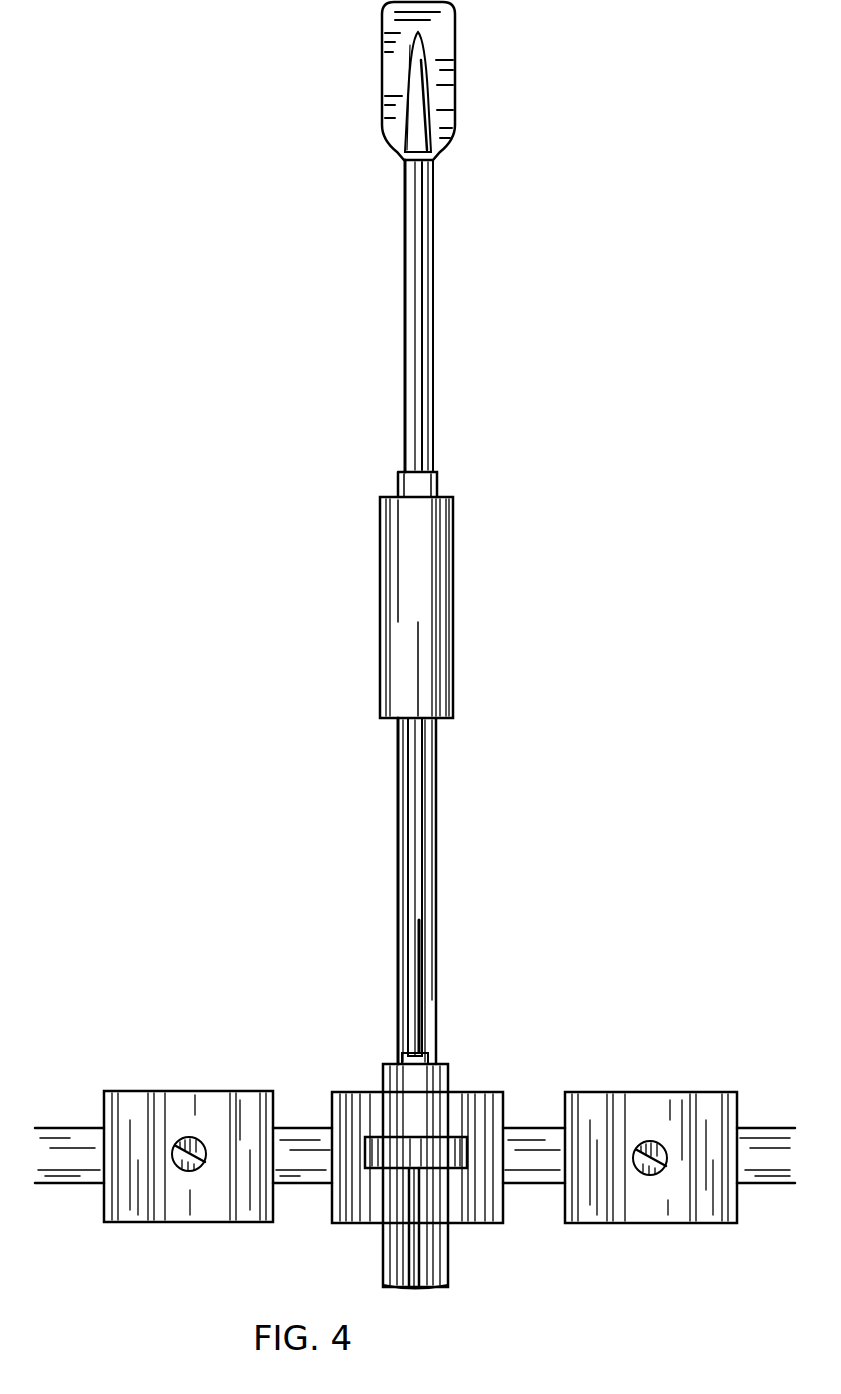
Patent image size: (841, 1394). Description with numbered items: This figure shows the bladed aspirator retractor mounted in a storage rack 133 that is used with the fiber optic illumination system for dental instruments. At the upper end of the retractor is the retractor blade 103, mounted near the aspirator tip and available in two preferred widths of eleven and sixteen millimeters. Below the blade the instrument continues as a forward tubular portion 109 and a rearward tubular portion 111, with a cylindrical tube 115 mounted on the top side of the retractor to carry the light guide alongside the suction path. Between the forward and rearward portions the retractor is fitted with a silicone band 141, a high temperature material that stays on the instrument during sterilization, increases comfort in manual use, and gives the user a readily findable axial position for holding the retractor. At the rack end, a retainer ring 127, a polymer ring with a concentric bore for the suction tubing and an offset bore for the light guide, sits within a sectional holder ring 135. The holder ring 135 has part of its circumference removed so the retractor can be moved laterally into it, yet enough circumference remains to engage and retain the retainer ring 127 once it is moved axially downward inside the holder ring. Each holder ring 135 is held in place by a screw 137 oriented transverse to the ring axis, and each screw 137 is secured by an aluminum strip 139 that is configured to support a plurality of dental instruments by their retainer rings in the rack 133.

The retractor blade 103 is at (452, 72).
The forward tubular portion 109 is at (418, 380).
The rearward tubular portion 111 is at (437, 940).
The cylindrical tube 115 is at (410, 818).
The retainer ring 127 is at (383, 1072).
The storage rack 133 is at (137, 1062).
The sectional holder ring 135 is at (489, 1093).
The screw 137 is at (189, 1137).
The aluminum strip 139 is at (308, 1190).
The silicone band 141 is at (383, 548).